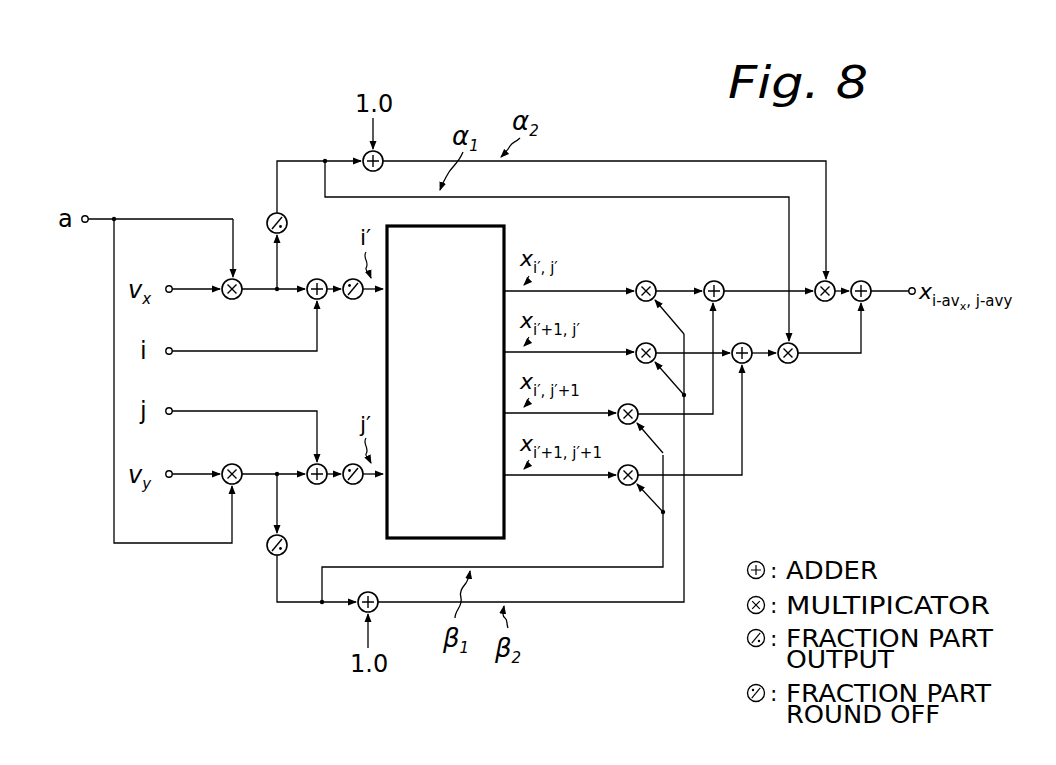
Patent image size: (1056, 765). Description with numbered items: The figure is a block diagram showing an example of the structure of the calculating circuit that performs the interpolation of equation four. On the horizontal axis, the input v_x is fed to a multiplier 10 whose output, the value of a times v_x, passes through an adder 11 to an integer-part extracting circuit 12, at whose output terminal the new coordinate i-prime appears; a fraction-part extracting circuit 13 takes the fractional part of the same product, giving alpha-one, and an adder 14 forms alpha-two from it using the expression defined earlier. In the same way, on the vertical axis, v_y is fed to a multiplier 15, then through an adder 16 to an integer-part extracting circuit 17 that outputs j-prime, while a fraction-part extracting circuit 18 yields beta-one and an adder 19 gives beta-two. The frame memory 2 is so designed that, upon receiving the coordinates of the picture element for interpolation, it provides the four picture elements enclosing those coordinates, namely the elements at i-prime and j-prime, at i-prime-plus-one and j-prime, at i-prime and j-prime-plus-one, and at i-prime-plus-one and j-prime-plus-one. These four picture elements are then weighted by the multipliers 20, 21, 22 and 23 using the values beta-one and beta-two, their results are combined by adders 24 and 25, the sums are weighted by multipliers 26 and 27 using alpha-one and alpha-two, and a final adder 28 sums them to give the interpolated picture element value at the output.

The frame memory 2 is at (506, 230).
The multiplier 10 is at (228, 300).
The adder 11 is at (310, 300).
The integer-part extracting circuit 12 is at (353, 300).
The fraction-part extracting circuit 13 is at (288, 222).
The adder 14 is at (383, 158).
The multiplier 15 is at (226, 465).
The adder 16 is at (310, 466).
The integer-part extracting circuit 17 is at (353, 485).
The fraction-part extracting circuit 18 is at (288, 545).
The adder 19 is at (378, 599).
The multiplier 20 is at (662, 272).
The multiplier 21 is at (655, 360).
The multiplier 22 is at (637, 420).
The multiplier 23 is at (626, 486).
The adder 24 is at (722, 283).
The adder 25 is at (759, 335).
The multiplier 26 is at (798, 350).
The multiplier 27 is at (833, 283).
The adder 28 is at (868, 283).